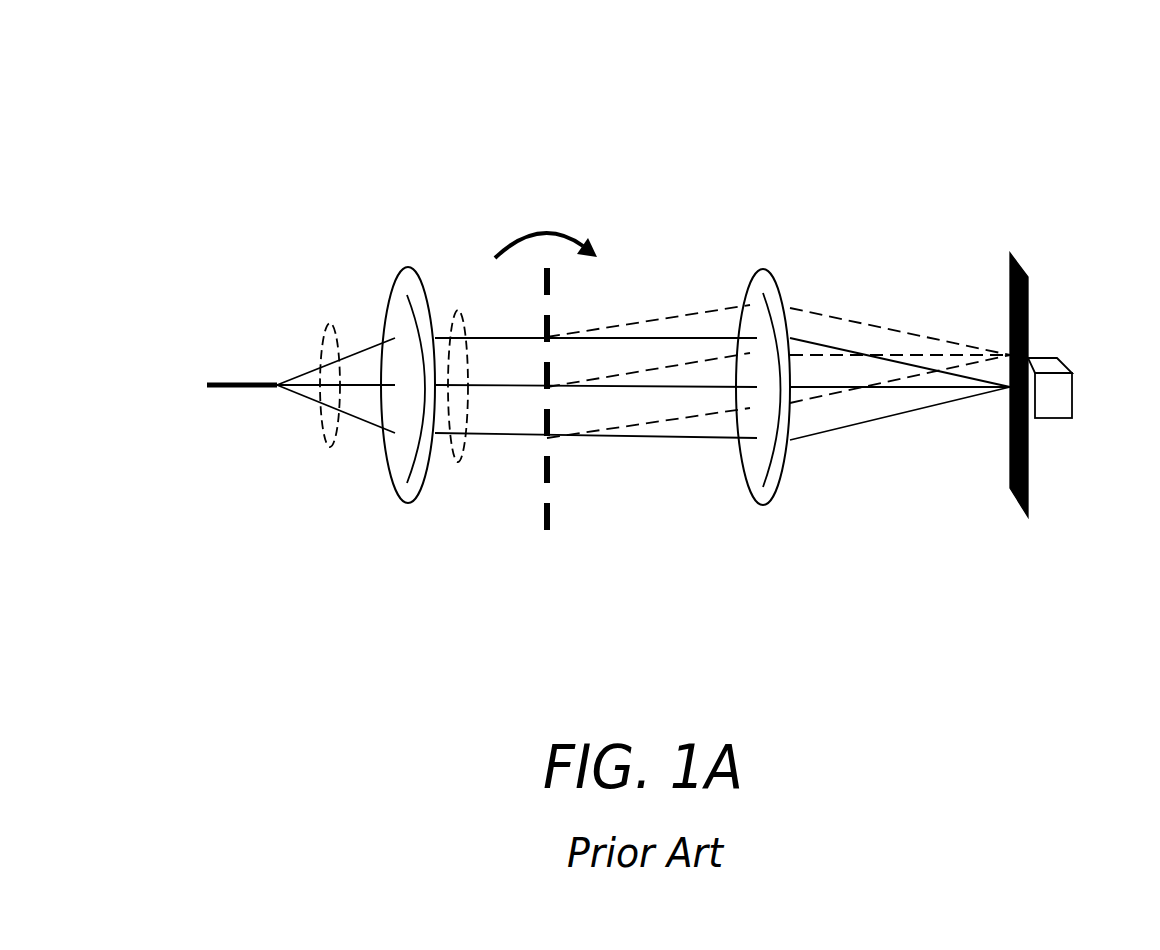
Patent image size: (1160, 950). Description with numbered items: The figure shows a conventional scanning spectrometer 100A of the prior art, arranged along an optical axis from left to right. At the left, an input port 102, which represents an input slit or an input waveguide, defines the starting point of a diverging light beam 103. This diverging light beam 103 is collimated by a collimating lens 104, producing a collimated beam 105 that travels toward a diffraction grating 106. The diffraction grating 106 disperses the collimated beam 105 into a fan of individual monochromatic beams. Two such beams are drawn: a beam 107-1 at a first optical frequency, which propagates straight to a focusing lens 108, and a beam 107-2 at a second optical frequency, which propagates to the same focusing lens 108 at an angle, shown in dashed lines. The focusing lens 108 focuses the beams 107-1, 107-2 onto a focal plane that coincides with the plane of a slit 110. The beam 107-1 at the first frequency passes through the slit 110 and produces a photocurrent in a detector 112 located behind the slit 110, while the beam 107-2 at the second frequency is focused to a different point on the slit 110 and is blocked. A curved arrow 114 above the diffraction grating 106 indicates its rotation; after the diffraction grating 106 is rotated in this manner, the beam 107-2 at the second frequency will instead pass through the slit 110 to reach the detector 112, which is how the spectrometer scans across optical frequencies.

The conventional scanning spectrometer 100A is at (897, 71).
The input port 102 is at (240, 382).
The diverging light beam 103 is at (330, 440).
The collimating lens 104 is at (405, 268).
The collimated beam 105 is at (458, 462).
The diffraction grating 106 is at (547, 530).
The beam at optical frequency f1 107-1 is at (630, 438).
The beam at optical frequency f2 107-2 is at (672, 315).
The focusing lens 108 is at (763, 505).
The slit 110 is at (1020, 503).
The detector 112 is at (1058, 418).
The arrow 114 is at (546, 222).